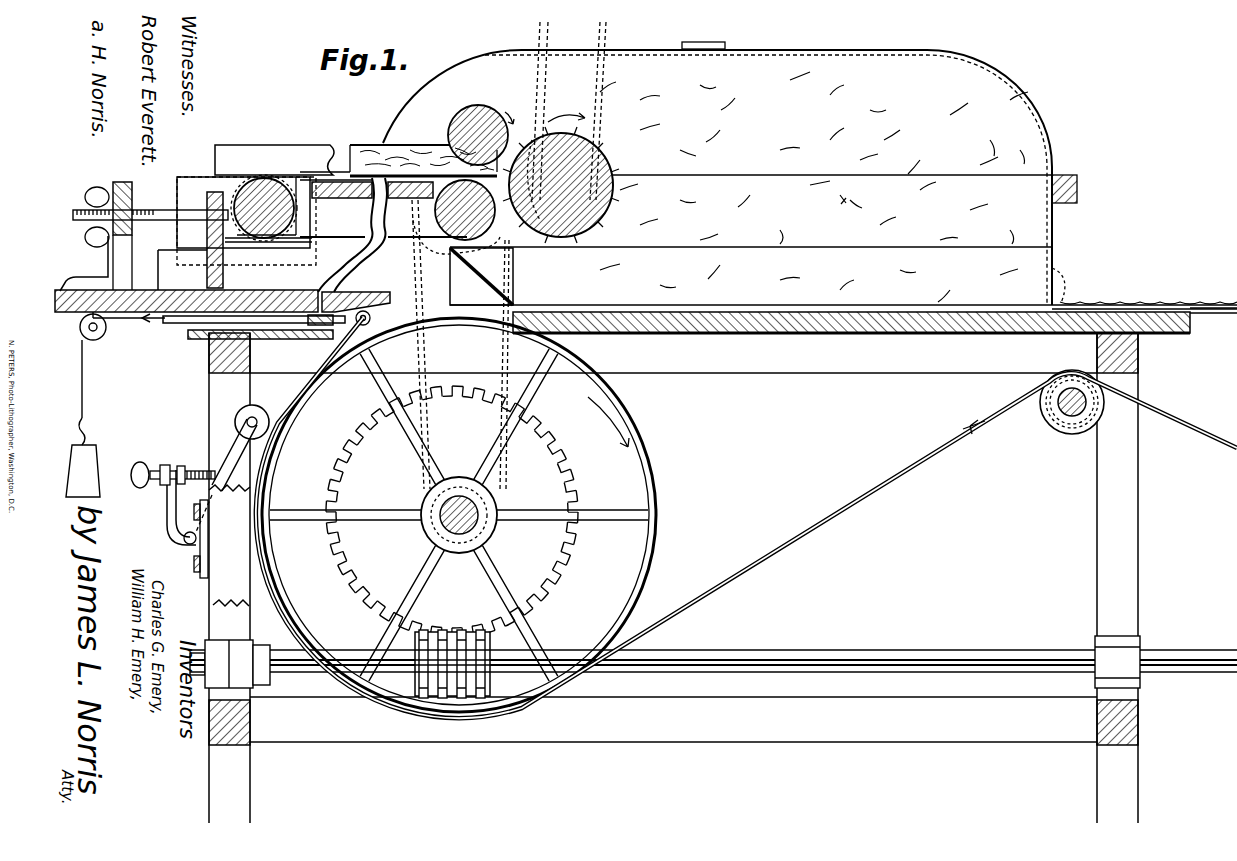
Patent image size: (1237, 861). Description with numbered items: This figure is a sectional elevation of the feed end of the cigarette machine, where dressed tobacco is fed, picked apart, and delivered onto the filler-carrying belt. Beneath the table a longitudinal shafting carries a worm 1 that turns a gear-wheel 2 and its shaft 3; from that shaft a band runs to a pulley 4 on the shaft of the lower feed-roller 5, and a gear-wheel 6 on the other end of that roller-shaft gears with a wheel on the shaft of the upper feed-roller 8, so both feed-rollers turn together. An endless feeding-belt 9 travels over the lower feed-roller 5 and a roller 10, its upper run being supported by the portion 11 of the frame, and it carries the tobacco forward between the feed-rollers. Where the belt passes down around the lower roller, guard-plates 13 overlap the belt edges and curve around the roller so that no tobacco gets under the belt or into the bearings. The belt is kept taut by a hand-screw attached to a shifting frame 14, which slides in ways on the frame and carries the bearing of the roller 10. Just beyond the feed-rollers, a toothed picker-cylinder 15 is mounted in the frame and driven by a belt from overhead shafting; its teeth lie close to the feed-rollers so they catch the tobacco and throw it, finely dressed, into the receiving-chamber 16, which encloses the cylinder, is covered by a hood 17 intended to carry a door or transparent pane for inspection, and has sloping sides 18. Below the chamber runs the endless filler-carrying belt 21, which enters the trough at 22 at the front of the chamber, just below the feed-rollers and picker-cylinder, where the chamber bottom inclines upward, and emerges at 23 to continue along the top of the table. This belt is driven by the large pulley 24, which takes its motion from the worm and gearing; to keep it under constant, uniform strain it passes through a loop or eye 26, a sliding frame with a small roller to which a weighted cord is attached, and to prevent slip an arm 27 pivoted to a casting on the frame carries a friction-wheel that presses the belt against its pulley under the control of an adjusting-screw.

The worm 1 is at (508, 628).
The gear-wheel 2 is at (452, 512).
The shaft 3 is at (440, 525).
The pulley 4 is at (460, 344).
The lower feed-roller 5 is at (456, 217).
The gear-wheel 6 is at (144, 236).
The upper feed-roller 8 is at (480, 132).
The feeding-belt 9 is at (405, 238).
The roller 10 is at (280, 230).
The portion of the frame 11 is at (398, 184).
The guard-plates 13 is at (274, 160).
The shifting frame 14 is at (246, 232).
The picker-cylinder 15 is at (610, 169).
The receiving-chamber 16 is at (876, 201).
The hood 17 is at (717, 173).
The sloping sides 18 is at (650, 273).
The filler-carrying belt 21 is at (403, 303).
The entry point 22 is at (502, 322).
The exit point 23 is at (1063, 304).
The pulley 24 is at (650, 555).
The loop or eye 26 is at (352, 324).
The arm 27 is at (240, 452).